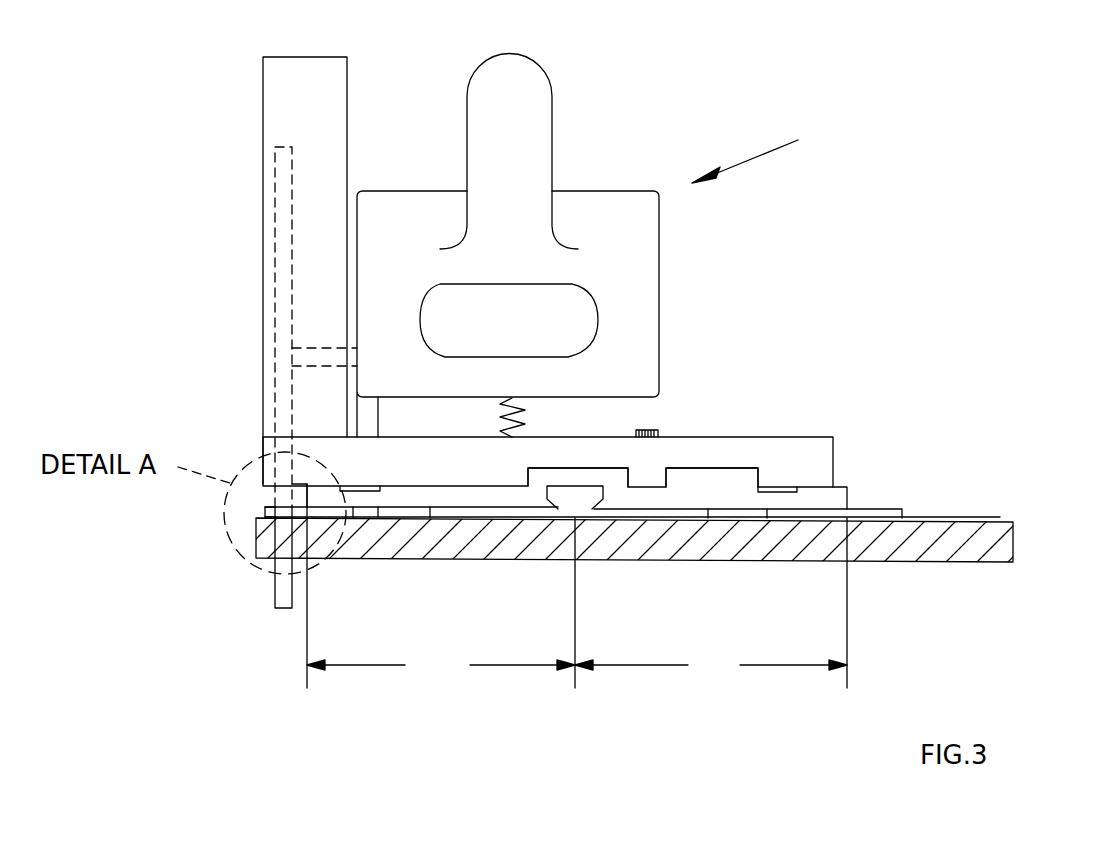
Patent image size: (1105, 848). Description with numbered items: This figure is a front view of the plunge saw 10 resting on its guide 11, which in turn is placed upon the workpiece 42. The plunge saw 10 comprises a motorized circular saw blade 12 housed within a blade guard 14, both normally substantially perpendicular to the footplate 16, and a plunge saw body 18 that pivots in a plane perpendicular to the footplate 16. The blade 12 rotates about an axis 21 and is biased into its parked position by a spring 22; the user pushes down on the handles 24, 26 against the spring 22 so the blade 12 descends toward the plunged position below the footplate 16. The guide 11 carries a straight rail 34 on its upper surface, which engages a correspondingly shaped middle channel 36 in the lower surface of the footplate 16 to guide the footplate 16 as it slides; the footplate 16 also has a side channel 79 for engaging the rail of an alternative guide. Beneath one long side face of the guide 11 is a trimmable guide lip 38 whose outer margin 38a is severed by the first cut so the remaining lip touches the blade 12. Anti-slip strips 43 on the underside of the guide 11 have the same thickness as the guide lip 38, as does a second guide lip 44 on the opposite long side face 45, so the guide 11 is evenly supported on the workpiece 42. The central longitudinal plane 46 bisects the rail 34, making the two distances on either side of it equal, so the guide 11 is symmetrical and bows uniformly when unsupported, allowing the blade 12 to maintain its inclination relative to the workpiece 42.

The plunge saw 10 is at (762, 146).
The guide 11 is at (898, 517).
The circular saw blade 12 is at (275, 232).
The blade guard 14 is at (300, 110).
The footplate 16 is at (792, 475).
The plunge saw body 18 is at (610, 258).
The blade axis 21 is at (322, 365).
The spring 22 is at (500, 415).
The handle 24 is at (495, 110).
The handle 26 is at (487, 335).
The rail 34 is at (612, 480).
The middle channel 36 is at (602, 468).
The guide lip 38 is at (332, 508).
The outer margin of guide lip 38a is at (265, 513).
The workpiece 42 is at (1012, 520).
The anti-slip strip 43 is at (406, 510).
The second guide lip 44 is at (972, 532).
The opposite long side face 45 is at (848, 502).
The central longitudinal plane 46 is at (578, 682).
The side channel 79 is at (727, 467).